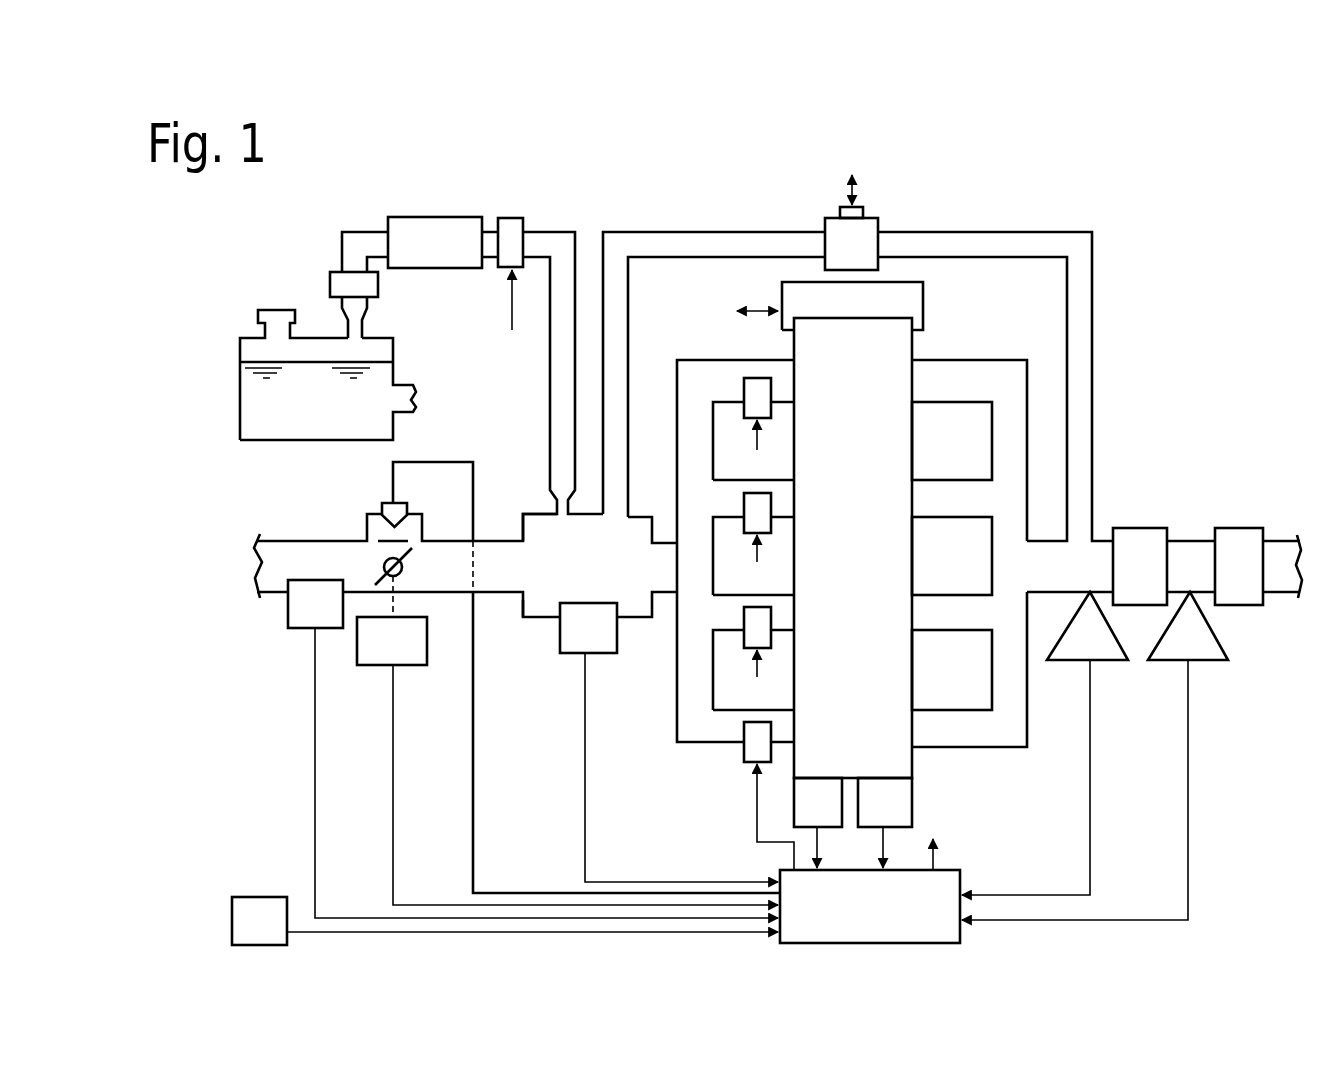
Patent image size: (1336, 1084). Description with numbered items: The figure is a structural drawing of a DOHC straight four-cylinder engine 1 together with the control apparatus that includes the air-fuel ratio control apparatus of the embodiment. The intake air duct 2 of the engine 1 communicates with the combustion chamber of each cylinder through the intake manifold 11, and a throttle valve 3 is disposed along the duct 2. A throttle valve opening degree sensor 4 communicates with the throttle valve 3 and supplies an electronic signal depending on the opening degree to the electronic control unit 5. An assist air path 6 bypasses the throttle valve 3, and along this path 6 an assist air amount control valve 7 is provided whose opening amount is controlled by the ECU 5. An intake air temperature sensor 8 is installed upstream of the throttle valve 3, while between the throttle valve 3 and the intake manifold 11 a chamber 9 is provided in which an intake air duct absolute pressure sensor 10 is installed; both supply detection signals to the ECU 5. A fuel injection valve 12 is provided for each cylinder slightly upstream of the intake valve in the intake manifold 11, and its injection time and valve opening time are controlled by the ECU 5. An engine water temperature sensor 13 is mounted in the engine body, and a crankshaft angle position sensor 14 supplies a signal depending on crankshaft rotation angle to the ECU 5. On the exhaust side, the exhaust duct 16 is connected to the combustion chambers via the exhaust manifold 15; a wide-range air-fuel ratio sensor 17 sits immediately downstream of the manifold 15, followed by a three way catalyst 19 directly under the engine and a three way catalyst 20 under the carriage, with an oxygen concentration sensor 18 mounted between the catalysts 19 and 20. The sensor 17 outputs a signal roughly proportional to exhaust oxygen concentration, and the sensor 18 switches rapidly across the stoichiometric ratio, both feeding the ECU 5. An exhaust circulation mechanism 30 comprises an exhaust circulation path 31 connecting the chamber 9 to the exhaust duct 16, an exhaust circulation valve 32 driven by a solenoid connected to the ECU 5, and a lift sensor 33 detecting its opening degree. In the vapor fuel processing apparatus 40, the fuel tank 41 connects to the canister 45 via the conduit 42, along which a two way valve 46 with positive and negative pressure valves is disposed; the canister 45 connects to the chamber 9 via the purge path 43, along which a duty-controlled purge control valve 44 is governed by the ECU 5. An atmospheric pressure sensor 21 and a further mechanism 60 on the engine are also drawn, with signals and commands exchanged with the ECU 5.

The engine 1 is at (912, 762).
The intake air duct 2 is at (293, 540).
The throttle valve 3 is at (407, 560).
The throttle valve opening degree sensor 4 is at (415, 666).
The electronic control unit 5 is at (960, 878).
The assist air path 6 is at (378, 522).
The assist air amount control valve 7 is at (383, 505).
The intake air temperature sensor 8 is at (297, 628).
The chamber 9 is at (537, 617).
The intake air duct absolute pressure sensor 10 is at (563, 653).
The intake manifold 11 is at (712, 360).
The fuel injection valve 12 is at (745, 383).
The engine water temperature sensor 13 is at (794, 784).
The crankshaft angle position sensor 14 is at (912, 798).
The exhaust manifold 15 is at (953, 360).
The exhaust duct 16 is at (1100, 540).
The wide-range air-fuel ratio sensor 17 is at (1113, 662).
The oxygen concentration sensor 18 is at (1213, 662).
The three way catalyst 19 is at (1150, 528).
The three way catalyst 20 is at (1242, 528).
The atmospheric pressure sensor 21 is at (262, 897).
The exhaust circulation mechanism 30 is at (965, 197).
The exhaust circulation path 31 is at (1092, 327).
The exhaust circulation valve 32 is at (825, 222).
The lift sensor 33 is at (867, 207).
The vapor fuel processing apparatus 40 is at (537, 200).
The fuel tank 41 is at (249, 338).
The conduit 42 is at (352, 232).
The purge path 43 is at (549, 412).
The purge control valve 44 is at (510, 218).
The canister 45 is at (405, 217).
The two way valve 46 is at (330, 283).
The valve timing changing mechanism 60 is at (923, 305).